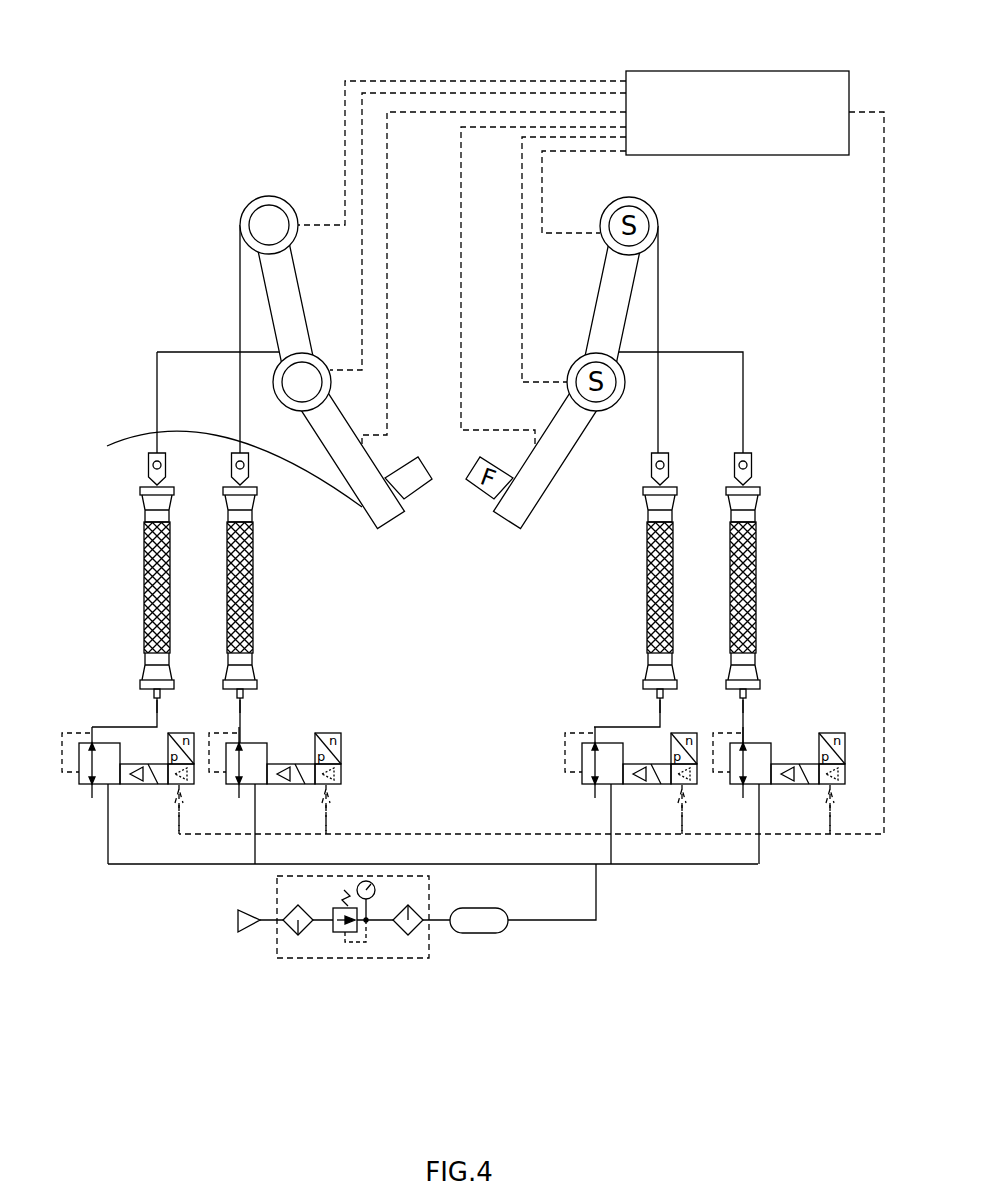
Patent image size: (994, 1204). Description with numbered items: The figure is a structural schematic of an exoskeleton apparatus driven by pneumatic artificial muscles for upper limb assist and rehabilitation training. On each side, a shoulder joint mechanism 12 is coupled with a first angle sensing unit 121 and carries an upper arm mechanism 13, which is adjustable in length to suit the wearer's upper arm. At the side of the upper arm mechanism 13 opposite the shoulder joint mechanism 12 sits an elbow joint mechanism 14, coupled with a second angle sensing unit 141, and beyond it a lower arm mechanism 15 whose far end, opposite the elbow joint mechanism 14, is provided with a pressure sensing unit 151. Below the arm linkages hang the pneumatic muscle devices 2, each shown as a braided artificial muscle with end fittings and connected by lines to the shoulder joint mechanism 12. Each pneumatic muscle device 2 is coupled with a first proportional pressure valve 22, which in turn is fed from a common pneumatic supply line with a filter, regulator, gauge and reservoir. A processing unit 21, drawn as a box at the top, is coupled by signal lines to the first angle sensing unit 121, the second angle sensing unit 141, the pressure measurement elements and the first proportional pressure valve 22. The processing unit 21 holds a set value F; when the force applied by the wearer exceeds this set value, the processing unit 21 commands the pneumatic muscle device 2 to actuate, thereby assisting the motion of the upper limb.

The pneumatic muscle device 2 is at (153, 553).
The shoulder joint mechanism 12 is at (218, 192).
The first angle sensing unit 121 is at (255, 222).
The upper arm mechanism 13 is at (280, 283).
The elbow joint mechanism 14 is at (211, 349).
The second angle sensing unit 141 is at (293, 385).
The lower arm mechanism 15 is at (322, 420).
The pressure sensing unit 151 is at (108, 447).
The processing unit 21 is at (813, 85).
The first proportional pressure valve 22 is at (140, 784).